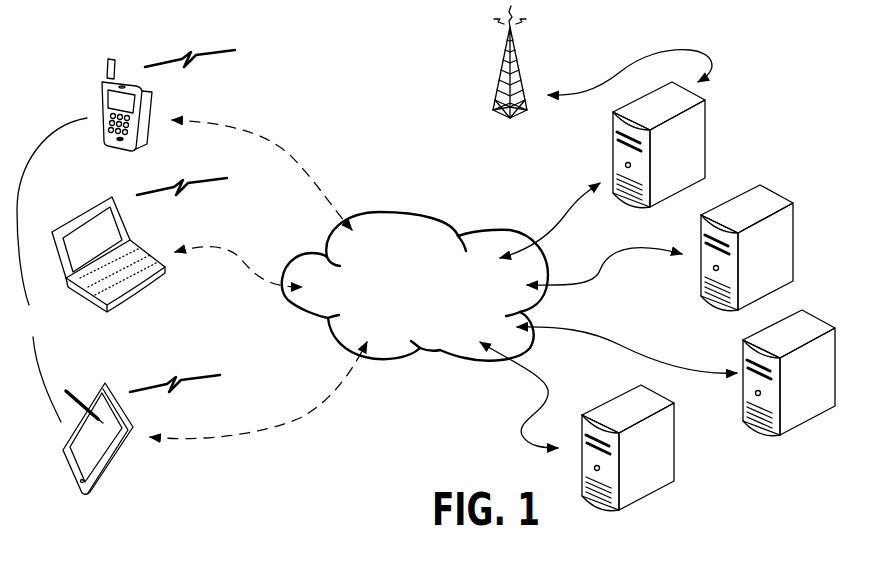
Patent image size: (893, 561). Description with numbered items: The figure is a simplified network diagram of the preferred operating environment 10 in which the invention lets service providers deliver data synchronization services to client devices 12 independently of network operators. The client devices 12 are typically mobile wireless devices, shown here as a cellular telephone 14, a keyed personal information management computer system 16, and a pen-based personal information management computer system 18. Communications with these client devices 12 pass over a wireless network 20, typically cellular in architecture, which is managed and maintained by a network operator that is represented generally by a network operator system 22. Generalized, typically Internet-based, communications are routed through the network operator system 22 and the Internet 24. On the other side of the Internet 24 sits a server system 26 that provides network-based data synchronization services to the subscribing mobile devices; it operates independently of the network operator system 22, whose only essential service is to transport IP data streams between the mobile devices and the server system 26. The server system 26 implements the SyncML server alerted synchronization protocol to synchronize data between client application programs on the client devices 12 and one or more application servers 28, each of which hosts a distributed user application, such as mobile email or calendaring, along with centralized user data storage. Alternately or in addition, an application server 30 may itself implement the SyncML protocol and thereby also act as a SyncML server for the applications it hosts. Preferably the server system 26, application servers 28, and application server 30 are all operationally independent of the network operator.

The operating environment 10 is at (388, 406).
The client devices 12 is at (97, 310).
The cellular telephone 14 is at (118, 145).
The keyed personal information management computer system 16 is at (152, 290).
The pen-based personal information management computer system 18 is at (124, 457).
The wireless network 20 is at (493, 100).
The network operator system 22 is at (705, 143).
The Internet 24 is at (452, 337).
The server system 26 is at (716, 306).
The application server 28 is at (758, 430).
The application server 30 is at (668, 482).